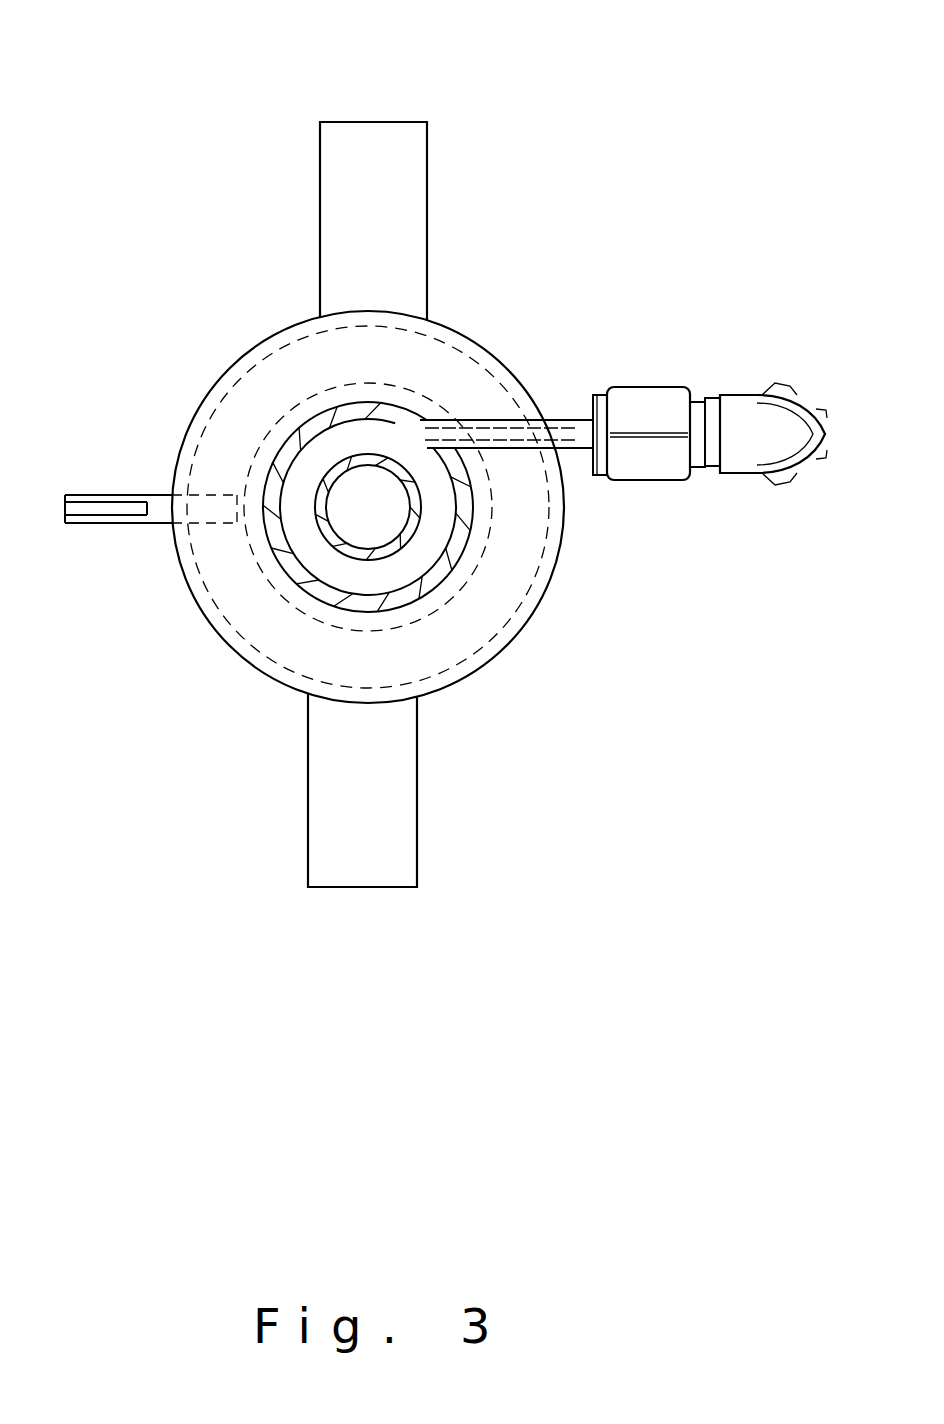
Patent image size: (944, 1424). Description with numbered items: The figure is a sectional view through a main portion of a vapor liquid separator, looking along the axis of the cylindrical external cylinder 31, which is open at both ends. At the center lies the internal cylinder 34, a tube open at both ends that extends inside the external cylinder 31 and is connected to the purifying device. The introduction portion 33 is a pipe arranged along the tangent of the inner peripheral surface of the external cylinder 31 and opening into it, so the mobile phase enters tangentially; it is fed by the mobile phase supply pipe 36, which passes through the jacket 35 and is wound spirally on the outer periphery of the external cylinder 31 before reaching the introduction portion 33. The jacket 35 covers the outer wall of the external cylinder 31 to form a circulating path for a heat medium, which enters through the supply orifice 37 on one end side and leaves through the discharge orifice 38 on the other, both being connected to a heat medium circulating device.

The external cylinder 31 is at (435, 583).
The introduction portion 33 is at (452, 412).
The internal cylinder 34 is at (325, 475).
The jacket 35 is at (270, 682).
The mobile phase supply pipe 36 is at (498, 522).
The supply orifice 37 is at (305, 838).
The discharge orifice 38 is at (318, 163).